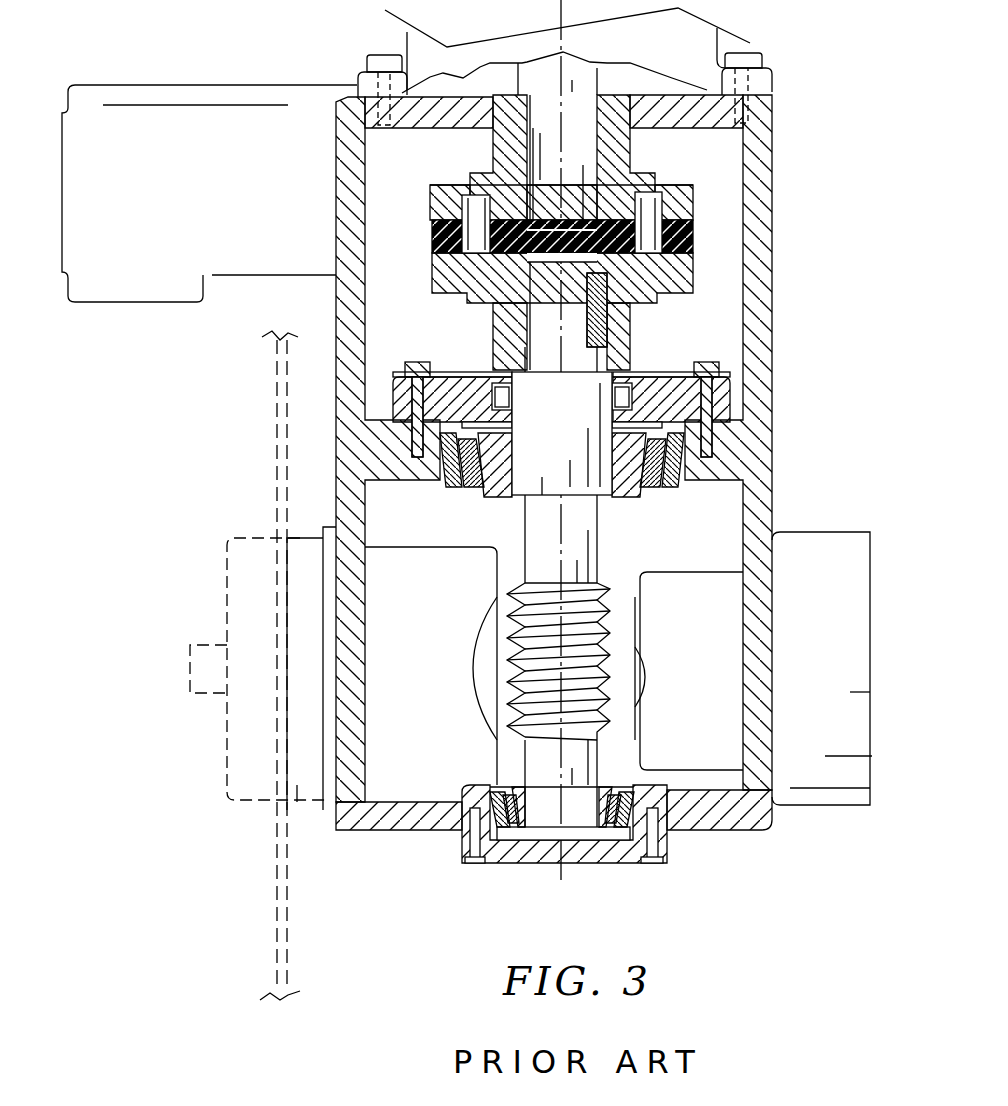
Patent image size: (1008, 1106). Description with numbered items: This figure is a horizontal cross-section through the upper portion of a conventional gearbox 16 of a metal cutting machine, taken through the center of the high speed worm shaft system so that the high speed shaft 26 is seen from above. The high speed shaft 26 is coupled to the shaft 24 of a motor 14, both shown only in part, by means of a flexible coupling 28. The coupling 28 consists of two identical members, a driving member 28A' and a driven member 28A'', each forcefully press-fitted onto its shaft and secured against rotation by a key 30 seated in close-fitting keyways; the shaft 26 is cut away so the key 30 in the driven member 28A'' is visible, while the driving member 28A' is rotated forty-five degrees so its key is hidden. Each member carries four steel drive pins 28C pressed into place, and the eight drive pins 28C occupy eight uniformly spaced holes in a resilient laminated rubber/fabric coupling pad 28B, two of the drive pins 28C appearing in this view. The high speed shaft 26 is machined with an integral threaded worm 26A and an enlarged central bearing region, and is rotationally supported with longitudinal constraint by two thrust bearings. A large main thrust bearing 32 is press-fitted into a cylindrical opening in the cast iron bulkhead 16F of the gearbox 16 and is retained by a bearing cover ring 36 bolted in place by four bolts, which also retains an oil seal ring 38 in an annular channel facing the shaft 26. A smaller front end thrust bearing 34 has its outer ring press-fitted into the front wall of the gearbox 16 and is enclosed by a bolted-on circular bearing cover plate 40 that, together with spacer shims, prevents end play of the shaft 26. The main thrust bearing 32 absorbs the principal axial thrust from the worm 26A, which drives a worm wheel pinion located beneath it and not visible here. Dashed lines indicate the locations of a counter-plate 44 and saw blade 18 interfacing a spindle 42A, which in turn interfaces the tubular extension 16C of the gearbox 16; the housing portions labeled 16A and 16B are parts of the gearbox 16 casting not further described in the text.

The motor 14 is at (658, 53).
The gearbox 16 is at (288, 36).
The housing side portion 16A is at (222, 195).
The housing bottom wall 16B is at (667, 833).
The tubular extension 16C is at (330, 822).
The bulkhead 16F is at (727, 448).
The saw blade 18 is at (277, 418).
The shaft 24 is at (577, 166).
The high speed shaft 26 is at (577, 416).
The worm 26A is at (607, 592).
The flexible coupling 28 is at (540, 244).
The driving member 28A' is at (646, 184).
The driven member 28A'' is at (649, 282).
The coupling pad 28B is at (693, 232).
The drive pins 28C is at (658, 212).
The key 30 is at (612, 322).
The main thrust bearing 32 is at (690, 498).
The front end thrust bearing 34 is at (617, 773).
The bearing cover ring 36 is at (730, 387).
The oil seal ring 38 is at (660, 373).
The bearing cover plate 40 is at (577, 855).
The spindle 42A is at (297, 802).
The counter-plate 44 is at (247, 788).